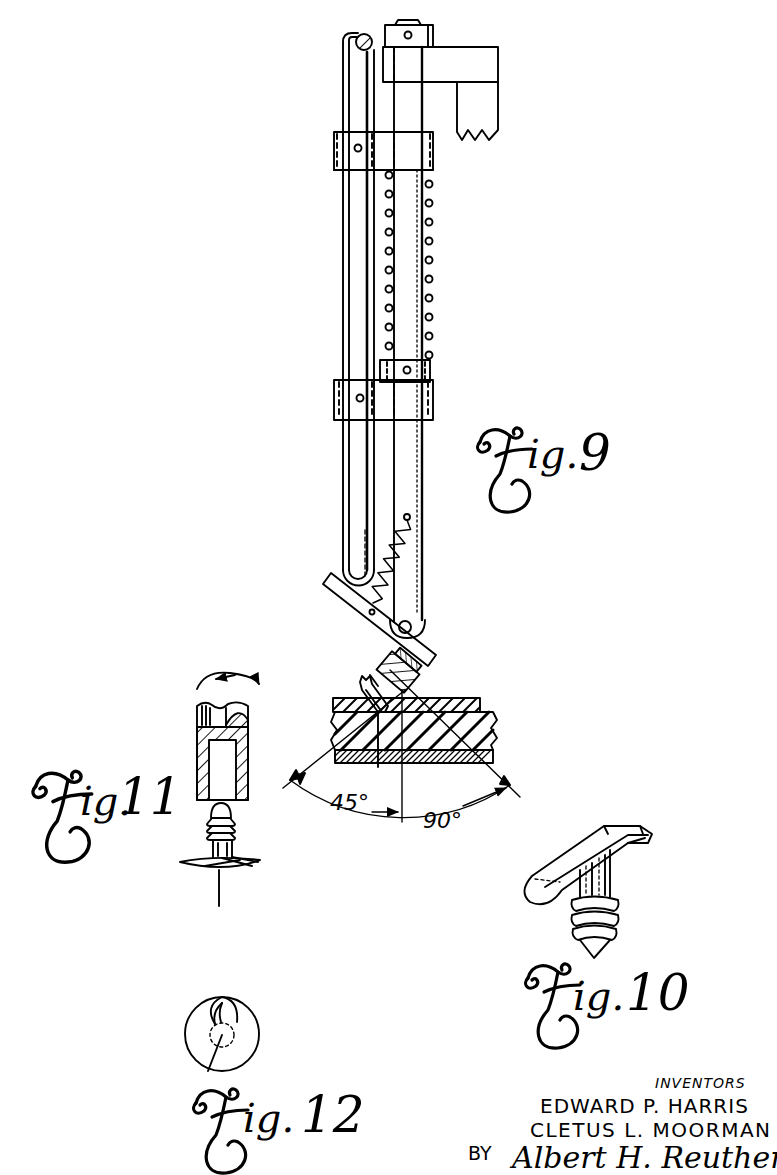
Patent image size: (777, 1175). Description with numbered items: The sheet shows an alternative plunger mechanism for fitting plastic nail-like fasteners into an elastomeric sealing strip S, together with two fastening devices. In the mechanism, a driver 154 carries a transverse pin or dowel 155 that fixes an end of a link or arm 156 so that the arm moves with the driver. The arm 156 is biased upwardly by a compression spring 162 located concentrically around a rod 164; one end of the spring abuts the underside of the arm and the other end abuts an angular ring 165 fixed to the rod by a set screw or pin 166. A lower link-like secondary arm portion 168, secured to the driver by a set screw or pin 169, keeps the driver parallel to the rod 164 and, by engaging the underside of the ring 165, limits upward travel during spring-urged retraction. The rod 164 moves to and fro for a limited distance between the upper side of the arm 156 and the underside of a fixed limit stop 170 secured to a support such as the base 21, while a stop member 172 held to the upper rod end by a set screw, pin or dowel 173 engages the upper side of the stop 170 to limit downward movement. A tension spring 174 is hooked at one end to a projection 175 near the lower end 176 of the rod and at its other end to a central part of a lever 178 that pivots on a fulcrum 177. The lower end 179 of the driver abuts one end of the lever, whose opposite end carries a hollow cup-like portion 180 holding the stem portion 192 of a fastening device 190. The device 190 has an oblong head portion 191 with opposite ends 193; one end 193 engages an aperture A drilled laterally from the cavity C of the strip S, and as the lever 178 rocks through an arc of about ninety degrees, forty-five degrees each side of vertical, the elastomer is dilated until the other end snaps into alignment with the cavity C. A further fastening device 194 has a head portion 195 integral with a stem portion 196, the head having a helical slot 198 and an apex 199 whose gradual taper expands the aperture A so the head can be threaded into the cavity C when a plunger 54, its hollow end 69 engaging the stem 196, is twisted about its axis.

In FIG. 9, the base 21 is at (483, 112).
In FIG. 11, the plunger 54 is at (197, 716).
In FIG. 11, the hollow end 69 is at (214, 787).
In FIG. 9, the driver 154 is at (343, 70).
In FIG. 9, the pin or dowel 155 is at (354, 149).
In FIG. 9, the link or arm 156 is at (337, 170).
In FIG. 9, the spring 162 is at (432, 222).
In FIG. 9, the rod 164 is at (410, 258).
In FIG. 9, the angular ring 165 is at (431, 368).
In FIG. 9, the set screw or pin 166 is at (410, 373).
In FIG. 9, the secondary arm portion 168 is at (340, 380).
In FIG. 9, the set screw or pin 169 is at (356, 399).
In FIG. 9, the limit stop 170 is at (488, 47).
In FIG. 9, the stop member 172 is at (433, 32).
In FIG. 9, the set screw, pin or dowel 173 is at (404, 34).
In FIG. 9, the tension spring 174 is at (405, 540).
In FIG. 9, the projection 175 is at (410, 515).
In FIG. 9, the lower end 176 is at (425, 602).
In FIG. 9, the fulcrum 177 is at (412, 630).
In FIG. 9, the lever 178 is at (345, 596).
In FIG. 9, the lower end 179 is at (356, 554).
In FIG. 9, the cup-like portion 180 is at (415, 682).
In FIG. 9, the fastening device 190 is at (358, 687).
In FIG. 10, the fastening device 190 is at (668, 889).
In FIG. 9, the head portion 191 is at (365, 684).
In FIG. 10, the head portion 191 is at (583, 843).
In FIG. 9, the stem portion 192 is at (376, 674).
In FIG. 10, the stem portion 192 is at (590, 898).
In FIG. 9, the ends 193 is at (376, 755).
In FIG. 10, the ends 193 is at (630, 826).
In FIG. 11, the fastening device 194 is at (282, 901).
In FIG. 12, the fastening device 194 is at (303, 1041).
In FIG. 11, the head portion 195 is at (192, 864).
In FIG. 12, the head portion 195 is at (243, 1058).
In FIG. 11, the stem portion 196 is at (234, 836).
In FIG. 12, the stem portion 196 is at (210, 1040).
In FIG. 11, the helical slot 198 is at (214, 869).
In FIG. 12, the helical slot 198 is at (224, 998).
In FIG. 11, the apex 199 is at (211, 903).
In FIG. 12, the apex 199 is at (214, 1073).
In FIG. 9, the aperture A is at (420, 700).
In FIG. 9, the cavity C is at (492, 731).
In FIG. 9, the sealing strip S is at (493, 747).